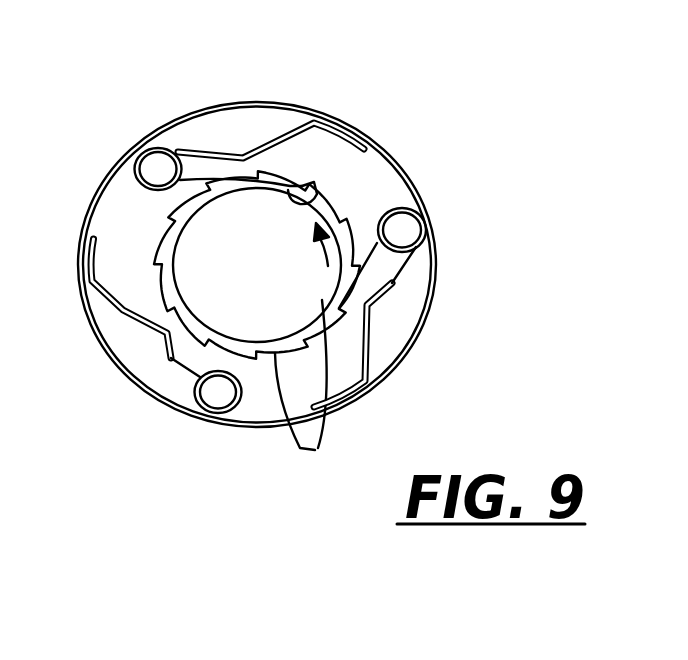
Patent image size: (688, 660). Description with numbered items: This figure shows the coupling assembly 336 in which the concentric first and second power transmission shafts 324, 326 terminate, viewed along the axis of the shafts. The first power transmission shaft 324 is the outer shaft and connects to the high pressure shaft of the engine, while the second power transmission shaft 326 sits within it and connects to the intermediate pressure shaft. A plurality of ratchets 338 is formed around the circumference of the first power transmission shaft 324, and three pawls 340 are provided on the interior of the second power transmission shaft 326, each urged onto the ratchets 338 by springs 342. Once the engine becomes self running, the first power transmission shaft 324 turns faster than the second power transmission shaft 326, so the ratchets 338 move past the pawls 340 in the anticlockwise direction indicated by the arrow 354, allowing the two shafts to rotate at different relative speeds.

The first power transmission shaft 324 is at (410, 174).
The second power transmission shaft 326 is at (312, 198).
The coupling assembly 336 is at (260, 462).
The ratchets 338 is at (315, 450).
The pawls 340 is at (193, 162).
The springs 342 is at (263, 150).
The arrow 354 is at (345, 356).